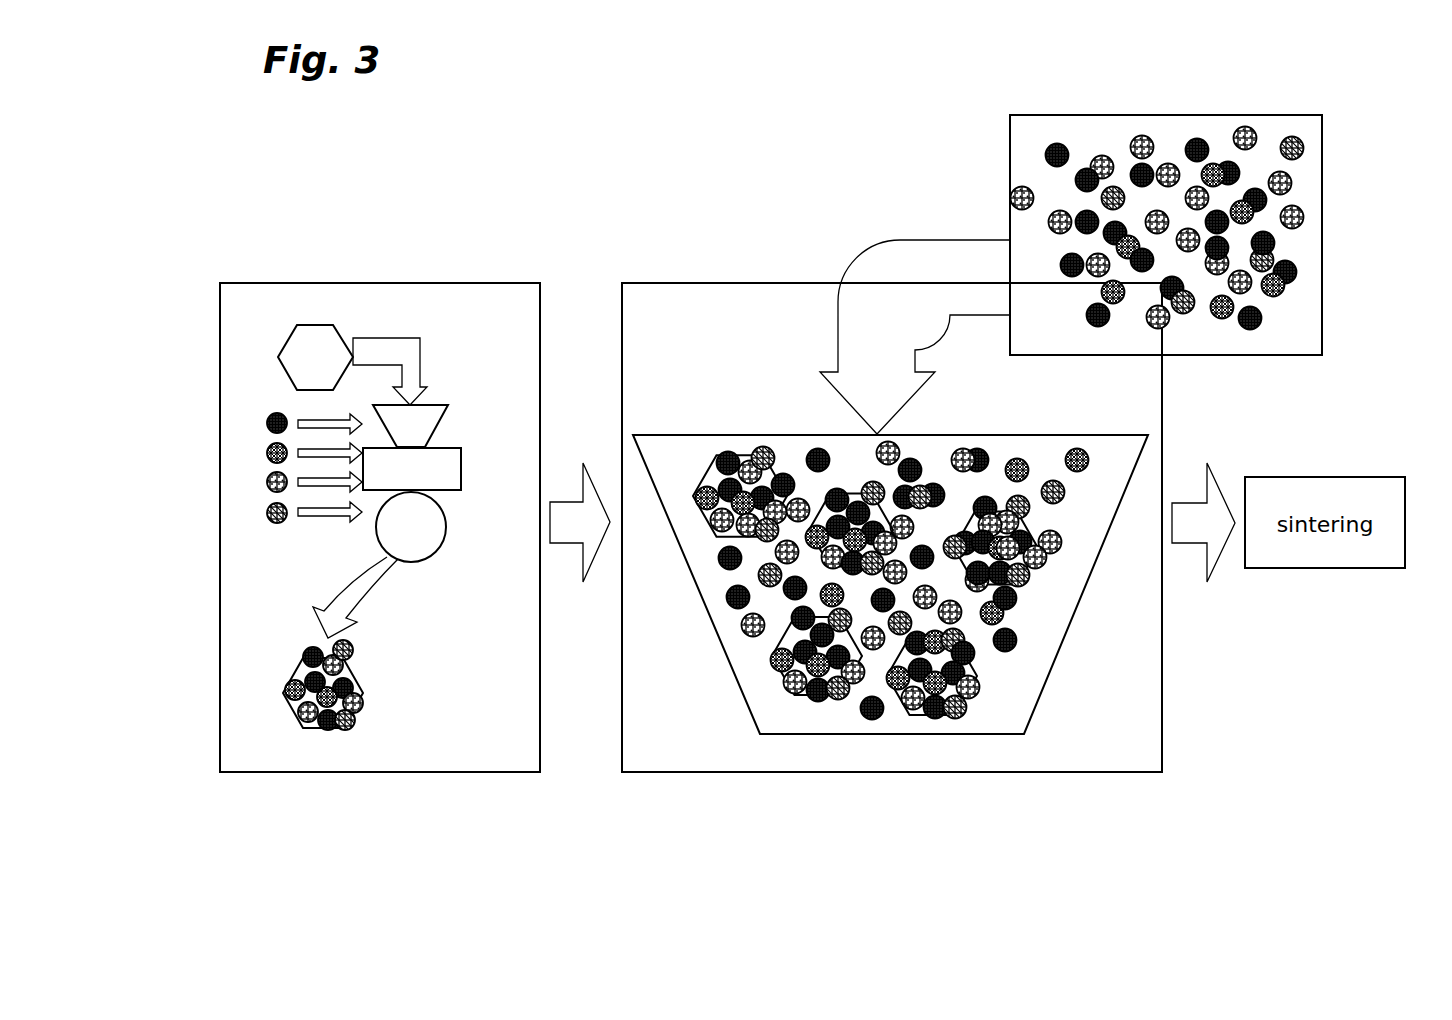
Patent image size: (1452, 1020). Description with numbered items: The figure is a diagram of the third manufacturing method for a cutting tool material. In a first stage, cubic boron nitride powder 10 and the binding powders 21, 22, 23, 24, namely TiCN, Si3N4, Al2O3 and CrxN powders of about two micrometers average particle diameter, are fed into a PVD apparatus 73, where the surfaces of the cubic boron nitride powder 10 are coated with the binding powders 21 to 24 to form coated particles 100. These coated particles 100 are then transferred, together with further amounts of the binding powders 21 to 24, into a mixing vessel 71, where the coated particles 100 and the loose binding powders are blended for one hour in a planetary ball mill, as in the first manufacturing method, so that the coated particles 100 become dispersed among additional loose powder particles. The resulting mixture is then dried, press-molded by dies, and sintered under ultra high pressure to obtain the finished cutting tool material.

The cubic boron nitride powder 10 is at (302, 360).
The TiCN powder 21 is at (270, 424).
The Si3N4 powder 22 is at (272, 462).
The Al2O3 powder 23 is at (270, 493).
The CrxN powder 24 is at (265, 518).
The mold (container) 71 is at (1044, 686).
The PVD apparatus 73 is at (445, 462).
The coated particles 100 is at (323, 746).